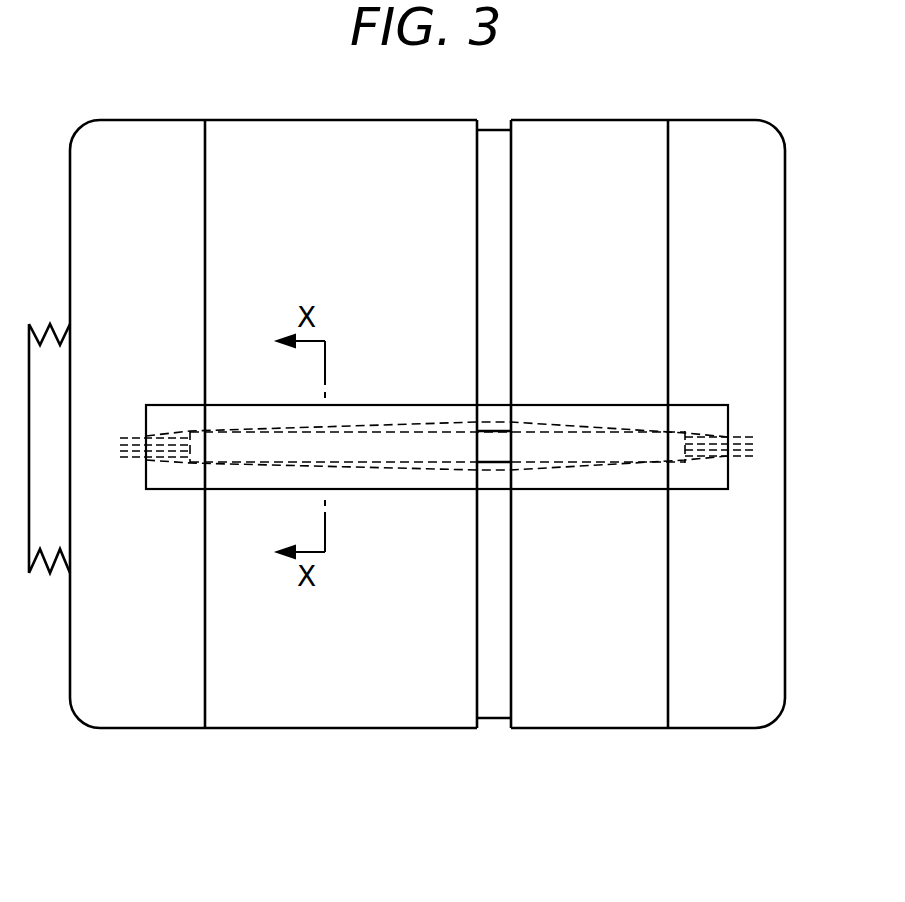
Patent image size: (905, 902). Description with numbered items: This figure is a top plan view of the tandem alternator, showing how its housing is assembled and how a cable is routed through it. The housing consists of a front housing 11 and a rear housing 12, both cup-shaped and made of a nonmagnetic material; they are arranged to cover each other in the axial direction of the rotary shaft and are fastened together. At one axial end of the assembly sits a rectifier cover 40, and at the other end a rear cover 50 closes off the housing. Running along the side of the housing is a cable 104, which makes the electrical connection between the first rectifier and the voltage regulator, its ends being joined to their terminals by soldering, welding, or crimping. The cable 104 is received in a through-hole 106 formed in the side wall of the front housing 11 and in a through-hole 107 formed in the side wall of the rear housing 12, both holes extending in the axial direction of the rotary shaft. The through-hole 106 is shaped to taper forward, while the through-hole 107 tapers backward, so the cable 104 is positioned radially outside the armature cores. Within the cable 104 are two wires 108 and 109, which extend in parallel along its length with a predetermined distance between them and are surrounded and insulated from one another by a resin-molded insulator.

The rear cover 50 is at (765, 692).
The front housing 11 is at (376, 707).
The rear housing 12 is at (609, 693).
The rectifier cover 40 is at (137, 707).
The cable 104 is at (495, 442).
The through-hole 106 is at (430, 470).
The through-hole 107 is at (565, 470).
The wire 108 is at (735, 490).
The wire 109 is at (735, 410).